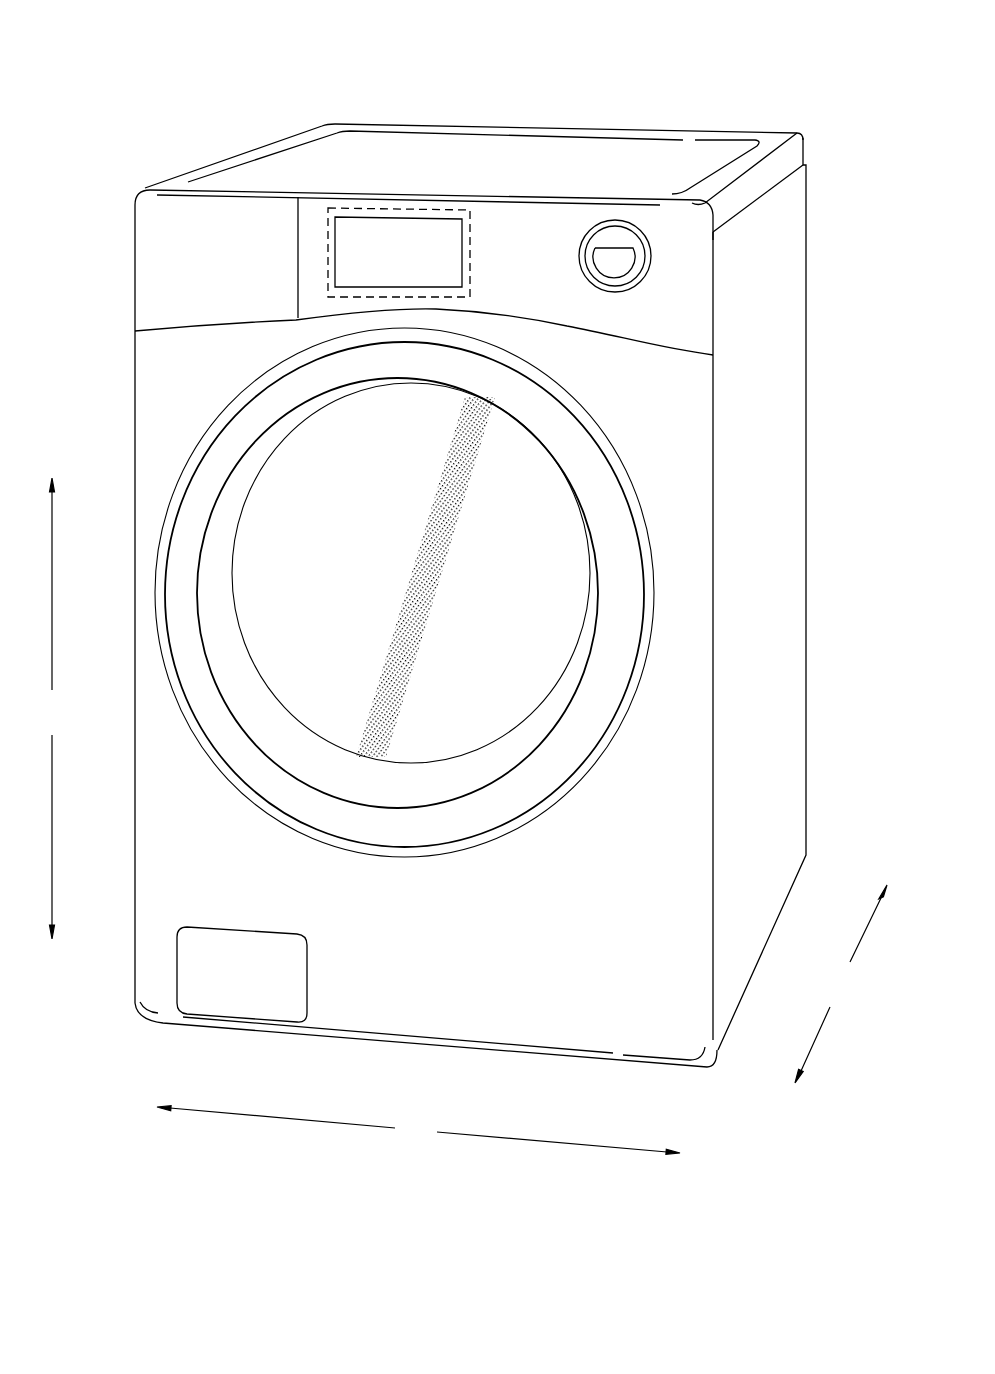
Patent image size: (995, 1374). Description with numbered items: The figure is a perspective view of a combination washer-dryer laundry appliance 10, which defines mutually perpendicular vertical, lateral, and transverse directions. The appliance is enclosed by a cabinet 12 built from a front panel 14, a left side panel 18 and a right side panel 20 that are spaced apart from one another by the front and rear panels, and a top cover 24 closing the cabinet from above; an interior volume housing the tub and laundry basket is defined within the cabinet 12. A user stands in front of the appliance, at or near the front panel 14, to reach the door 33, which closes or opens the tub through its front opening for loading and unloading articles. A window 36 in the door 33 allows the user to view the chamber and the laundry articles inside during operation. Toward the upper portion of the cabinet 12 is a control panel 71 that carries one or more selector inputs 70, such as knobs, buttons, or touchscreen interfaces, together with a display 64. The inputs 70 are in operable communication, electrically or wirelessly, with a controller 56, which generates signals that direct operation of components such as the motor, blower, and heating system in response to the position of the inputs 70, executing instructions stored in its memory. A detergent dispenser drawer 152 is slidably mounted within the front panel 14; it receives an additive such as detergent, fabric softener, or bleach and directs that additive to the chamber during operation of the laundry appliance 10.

The laundry appliance 10 is at (140, 65).
The cabinet 12 is at (770, 480).
The front panel 14 is at (455, 943).
The left side panel 18 is at (126, 380).
The right side panel 20 is at (780, 580).
The top cover 24 is at (264, 175).
The door 33 is at (618, 640).
The window 36 is at (517, 678).
The controller 56 is at (367, 213).
The display 64 is at (422, 257).
The selector inputs 70 is at (615, 262).
The control panel 71 is at (522, 238).
The detergent dispenser drawer 152 is at (165, 262).